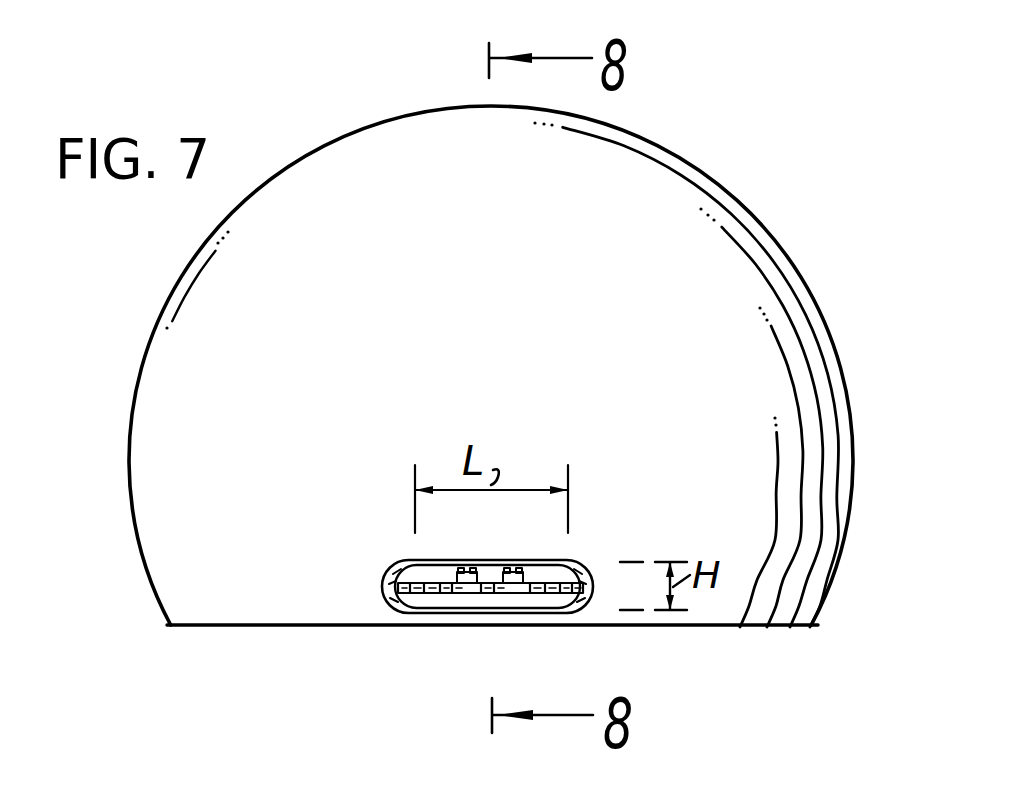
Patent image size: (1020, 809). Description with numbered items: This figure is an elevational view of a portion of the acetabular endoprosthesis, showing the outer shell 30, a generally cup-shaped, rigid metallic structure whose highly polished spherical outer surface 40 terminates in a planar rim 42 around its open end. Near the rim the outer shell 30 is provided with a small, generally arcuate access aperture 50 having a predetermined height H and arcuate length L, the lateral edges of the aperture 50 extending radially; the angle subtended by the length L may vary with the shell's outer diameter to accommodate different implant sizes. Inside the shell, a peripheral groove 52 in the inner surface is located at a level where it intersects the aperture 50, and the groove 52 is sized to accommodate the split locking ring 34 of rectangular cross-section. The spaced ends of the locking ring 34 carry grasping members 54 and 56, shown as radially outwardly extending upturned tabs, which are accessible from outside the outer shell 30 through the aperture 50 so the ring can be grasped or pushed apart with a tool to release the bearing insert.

The outer shell 30 is at (848, 413).
The locking ring 34 is at (432, 596).
The spherical outer surface 40 is at (150, 355).
The planar rim 42 is at (220, 627).
The access aperture 50 is at (490, 598).
The peripheral groove 52 is at (397, 586).
The grasping member 54 is at (514, 569).
The grasping member 56 is at (467, 569).